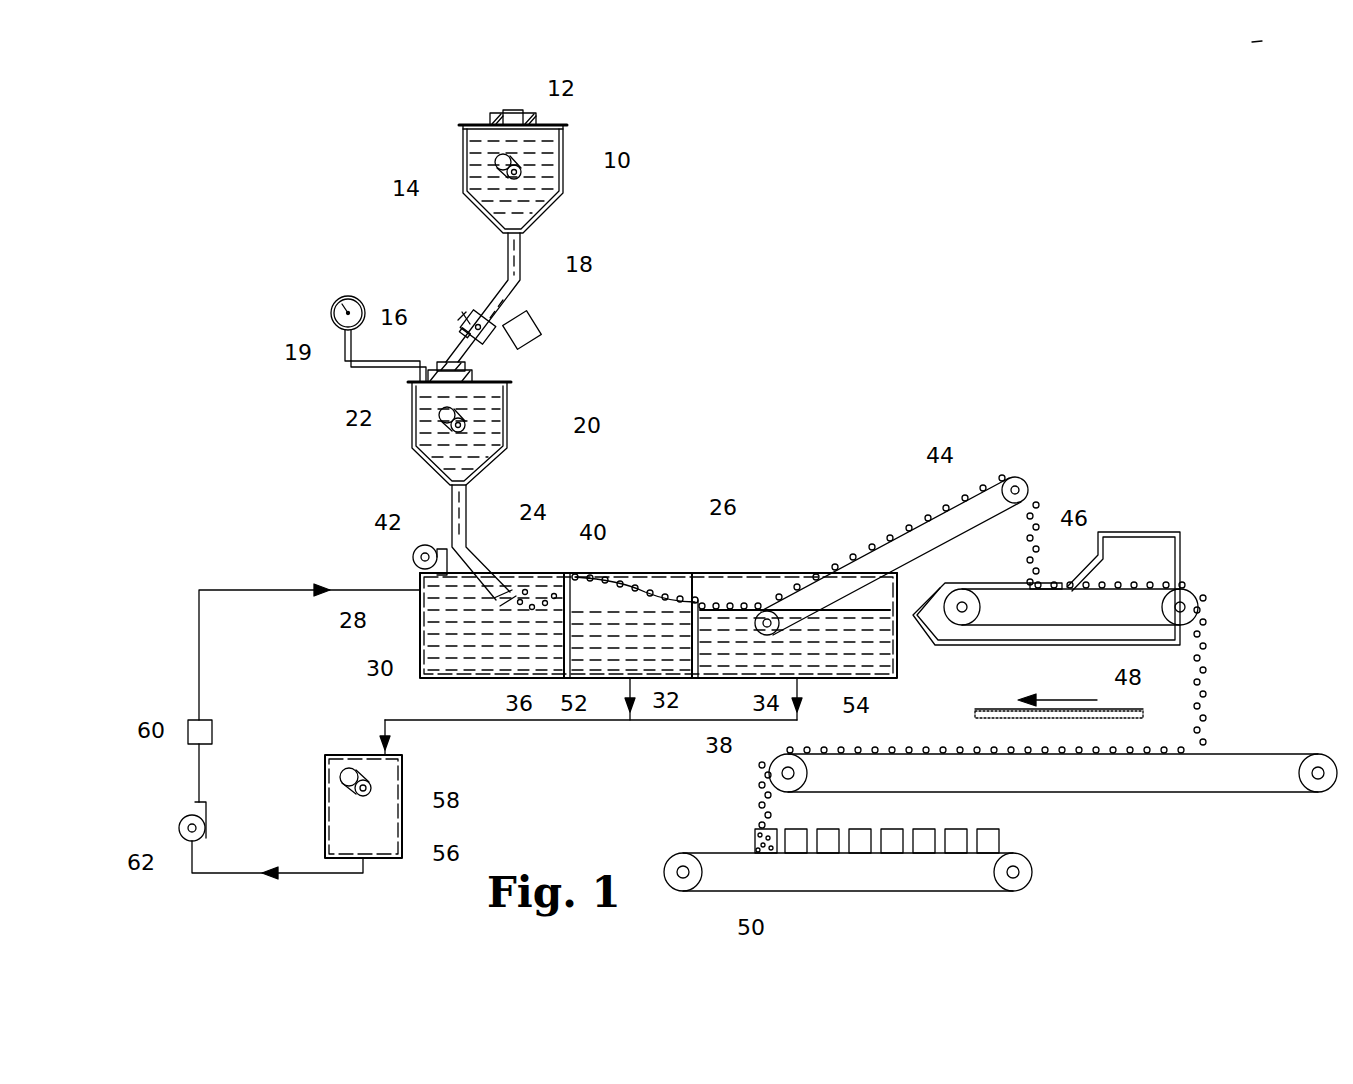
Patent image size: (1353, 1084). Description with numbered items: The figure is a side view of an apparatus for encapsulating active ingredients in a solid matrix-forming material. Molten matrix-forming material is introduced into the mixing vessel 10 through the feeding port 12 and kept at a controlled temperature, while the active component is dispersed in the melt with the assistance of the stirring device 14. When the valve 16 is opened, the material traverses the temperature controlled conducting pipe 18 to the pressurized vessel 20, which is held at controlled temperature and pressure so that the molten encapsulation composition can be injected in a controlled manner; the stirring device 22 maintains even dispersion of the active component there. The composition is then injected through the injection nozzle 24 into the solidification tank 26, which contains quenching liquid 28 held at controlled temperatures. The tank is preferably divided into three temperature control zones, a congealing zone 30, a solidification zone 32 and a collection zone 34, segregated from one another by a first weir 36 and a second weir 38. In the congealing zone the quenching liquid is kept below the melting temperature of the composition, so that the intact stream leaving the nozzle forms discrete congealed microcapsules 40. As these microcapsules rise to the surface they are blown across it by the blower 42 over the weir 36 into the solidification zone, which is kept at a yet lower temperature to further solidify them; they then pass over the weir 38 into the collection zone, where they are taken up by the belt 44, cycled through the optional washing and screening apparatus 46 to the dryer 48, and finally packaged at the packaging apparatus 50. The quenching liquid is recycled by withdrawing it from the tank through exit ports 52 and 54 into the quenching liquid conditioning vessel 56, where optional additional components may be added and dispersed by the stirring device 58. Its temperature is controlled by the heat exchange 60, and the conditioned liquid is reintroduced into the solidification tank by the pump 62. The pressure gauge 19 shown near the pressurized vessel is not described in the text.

The mixing vessel 10 is at (576, 164).
The feeding port 12 is at (508, 113).
The stirring device 14 is at (498, 168).
The valve 16 is at (456, 325).
The temperature controlled conducting pipe 18 is at (523, 272).
The pressure gauge 19 is at (333, 326).
The pressurized vessel 20 is at (524, 425).
The stirring device 22 is at (443, 423).
The injection nozzle 24 is at (512, 598).
The solidification tank 26 is at (709, 562).
The quenching liquid 28 is at (416, 620).
The congealing zone 30 is at (434, 657).
The solidification zone 32 is at (660, 657).
The collection zone 34 is at (765, 655).
The weir 36 is at (564, 655).
The weir 38 is at (700, 655).
The congealed microcapsules 40 is at (572, 590).
The blower 42 is at (420, 546).
The belt 44 is at (948, 503).
The washing and screening apparatus 46 is at (1063, 583).
The dryer 48 is at (1127, 709).
The packaging apparatus 50 is at (755, 892).
The exit port 52 is at (628, 690).
The exit port 54 is at (802, 690).
The quenching liquid conditioning vessel 56 is at (404, 848).
The stirring device 58 is at (371, 790).
The heat exchange 60 is at (188, 732).
The pump 62 is at (182, 838).